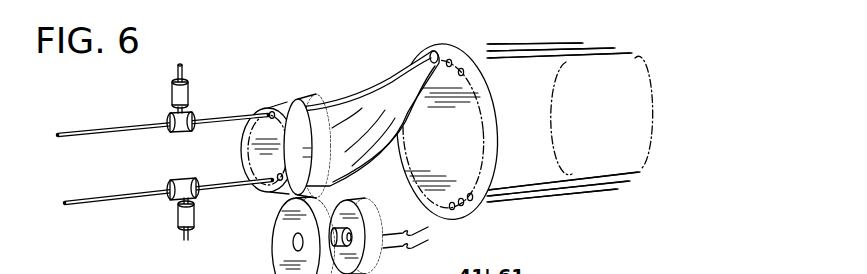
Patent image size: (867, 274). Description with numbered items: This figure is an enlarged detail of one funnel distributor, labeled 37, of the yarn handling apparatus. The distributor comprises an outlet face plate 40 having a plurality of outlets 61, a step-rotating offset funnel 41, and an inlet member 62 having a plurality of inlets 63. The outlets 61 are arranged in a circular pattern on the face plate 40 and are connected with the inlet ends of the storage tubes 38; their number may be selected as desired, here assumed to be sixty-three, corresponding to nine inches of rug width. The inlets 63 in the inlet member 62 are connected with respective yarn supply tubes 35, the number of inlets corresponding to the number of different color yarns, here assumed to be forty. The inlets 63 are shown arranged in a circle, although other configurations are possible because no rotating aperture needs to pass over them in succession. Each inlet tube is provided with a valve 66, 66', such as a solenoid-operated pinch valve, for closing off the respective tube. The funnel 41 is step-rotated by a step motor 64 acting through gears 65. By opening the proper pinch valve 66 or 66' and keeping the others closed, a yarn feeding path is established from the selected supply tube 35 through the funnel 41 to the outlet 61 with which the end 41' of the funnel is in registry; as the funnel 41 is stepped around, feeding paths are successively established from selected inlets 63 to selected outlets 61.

The yarn supply tubes 35 is at (227, 113).
The electron gun assembly 37 is at (356, 49).
The storage tubes 38 is at (525, 50).
The outlet face plate 40 is at (468, 45).
The step-rotating offset funnel 41 is at (369, 118).
The end of the funnel 41' is at (424, 31).
The outlets 61 is at (468, 213).
The inlet member 62 is at (289, 112).
The inlets 63 is at (269, 117).
The step motor 64 is at (363, 201).
The gears 65 is at (274, 219).
The valve 66 is at (161, 98).
The valve 66' is at (163, 209).